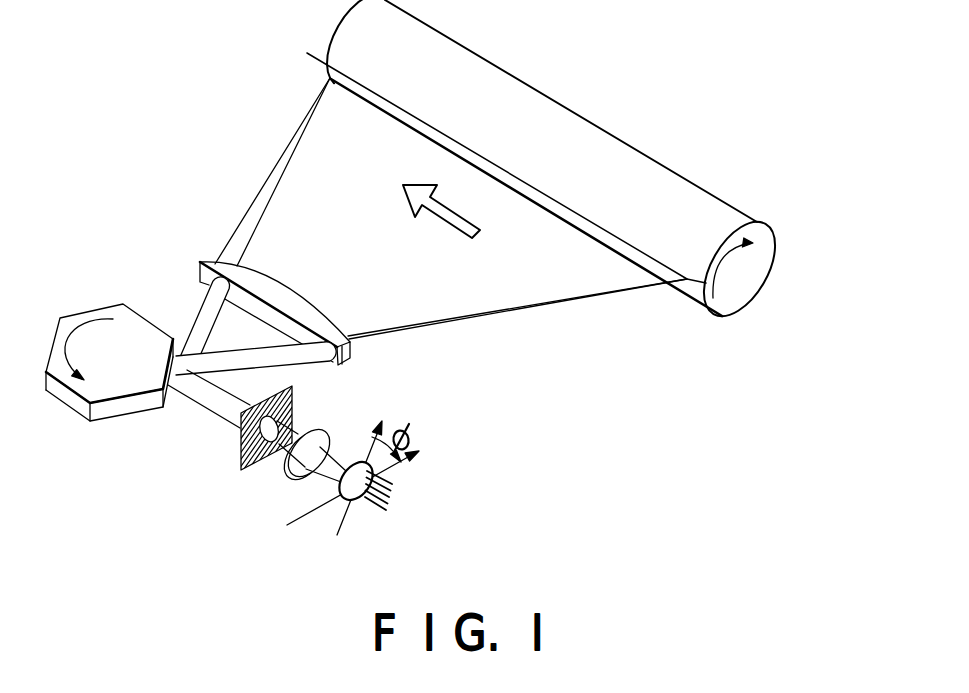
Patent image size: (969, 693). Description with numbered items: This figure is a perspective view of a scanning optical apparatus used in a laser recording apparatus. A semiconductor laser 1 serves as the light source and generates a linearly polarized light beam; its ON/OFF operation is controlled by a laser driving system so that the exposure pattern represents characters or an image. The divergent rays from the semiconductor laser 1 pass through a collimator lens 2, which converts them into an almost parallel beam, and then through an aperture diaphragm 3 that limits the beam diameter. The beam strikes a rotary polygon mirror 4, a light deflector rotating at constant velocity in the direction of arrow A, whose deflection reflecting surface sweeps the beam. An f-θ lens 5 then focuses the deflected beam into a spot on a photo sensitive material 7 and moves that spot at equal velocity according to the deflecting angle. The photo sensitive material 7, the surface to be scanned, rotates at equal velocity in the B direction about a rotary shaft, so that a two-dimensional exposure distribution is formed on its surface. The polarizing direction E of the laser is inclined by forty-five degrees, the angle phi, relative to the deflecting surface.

The semiconductor laser 1 is at (358, 503).
The collimator lens 2 is at (295, 475).
The aperture diaphragm 3 is at (242, 473).
The rotary polygon mirror 4 is at (129, 384).
The f-θ lens 5 is at (222, 257).
The photo sensitive material 7 is at (540, 110).